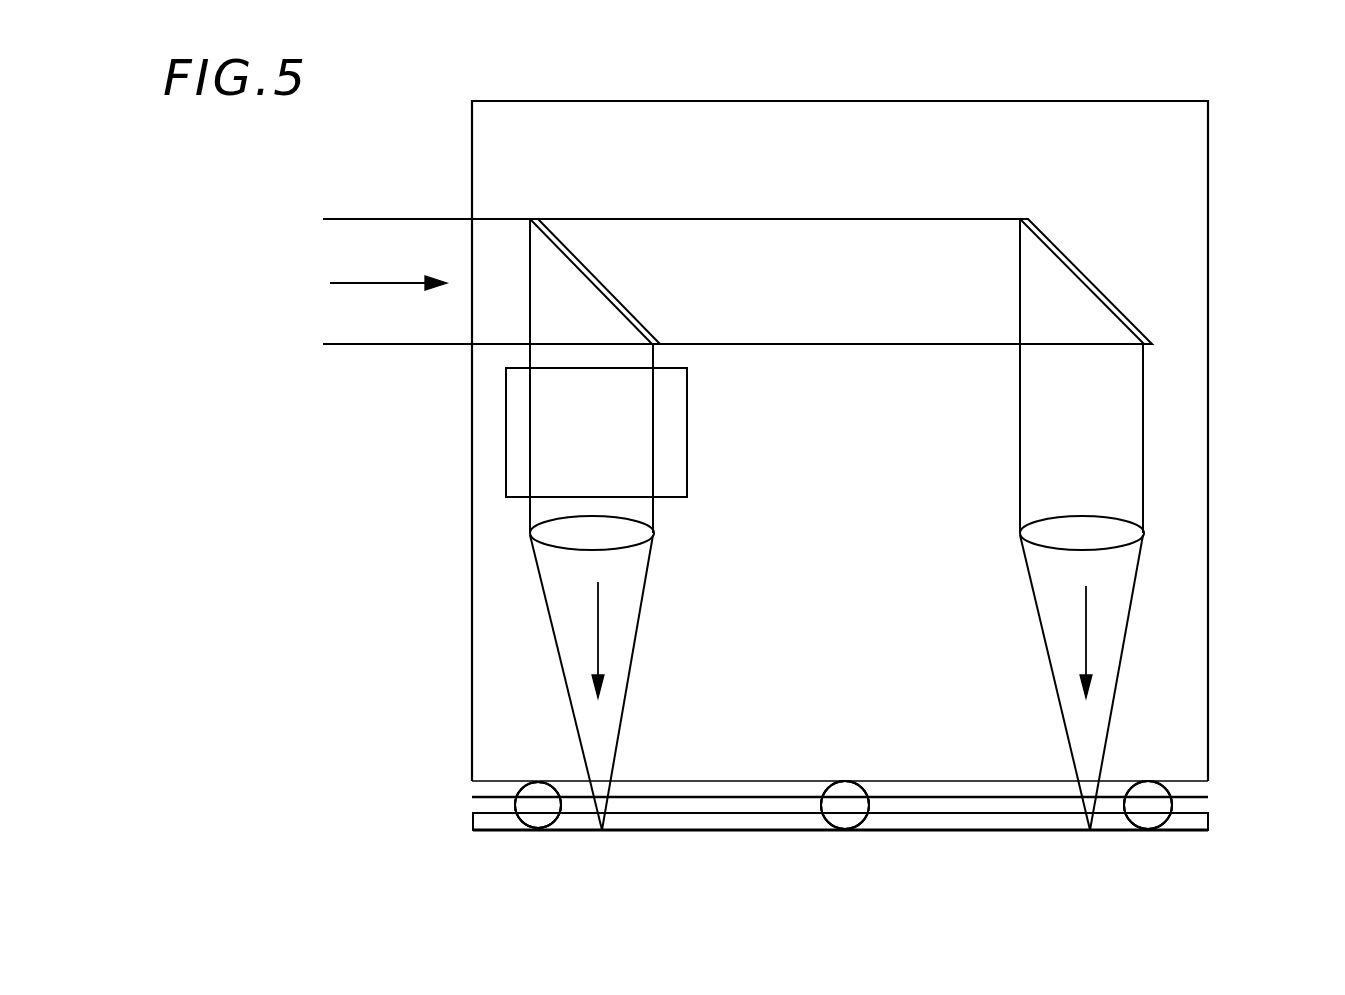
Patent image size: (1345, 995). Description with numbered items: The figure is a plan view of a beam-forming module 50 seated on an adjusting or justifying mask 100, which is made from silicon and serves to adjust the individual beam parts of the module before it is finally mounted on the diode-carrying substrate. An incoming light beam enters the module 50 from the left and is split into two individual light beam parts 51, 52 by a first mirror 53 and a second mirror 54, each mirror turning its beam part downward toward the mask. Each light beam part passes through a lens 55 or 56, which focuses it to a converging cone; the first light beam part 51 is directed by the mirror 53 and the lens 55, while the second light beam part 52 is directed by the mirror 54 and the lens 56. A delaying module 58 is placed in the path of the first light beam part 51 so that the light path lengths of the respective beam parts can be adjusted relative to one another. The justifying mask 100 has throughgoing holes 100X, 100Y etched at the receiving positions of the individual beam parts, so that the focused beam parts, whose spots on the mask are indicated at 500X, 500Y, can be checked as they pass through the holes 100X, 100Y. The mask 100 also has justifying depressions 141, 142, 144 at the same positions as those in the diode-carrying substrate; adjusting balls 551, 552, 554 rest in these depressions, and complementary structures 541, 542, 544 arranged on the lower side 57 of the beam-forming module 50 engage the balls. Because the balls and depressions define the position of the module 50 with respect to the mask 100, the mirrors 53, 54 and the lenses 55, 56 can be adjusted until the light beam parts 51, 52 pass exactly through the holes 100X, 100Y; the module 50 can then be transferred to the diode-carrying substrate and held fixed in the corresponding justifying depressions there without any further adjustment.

The beam-forming module 50 is at (1250, 352).
The light beam part 51 is at (646, 602).
The light beam part 52 is at (1040, 632).
The mirror 53 is at (556, 237).
The mirror 54 is at (1048, 237).
The lens 55 is at (646, 530).
The lens 56 is at (1031, 529).
The lower side 57 is at (1205, 792).
The delaying module 58 is at (678, 429).
The adjusting or justifying mask 100 is at (1210, 818).
The throughgoing hole 100X is at (603, 832).
The throughgoing hole 100Y is at (1090, 832).
The X-direction beam spot 500X is at (600, 790).
The Y-direction beam spot 500Y is at (1090, 785).
The justifying depression 141 is at (533, 832).
The justifying depression 142 is at (1150, 830).
The justifying depression 144 is at (845, 830).
The complementary structure 541 is at (538, 782).
The complementary structure 542 is at (1148, 781).
The complementary structure 544 is at (845, 781).
The adjusting ball 551 is at (532, 805).
The adjusting ball 552 is at (1160, 812).
The adjusting ball 554 is at (836, 808).